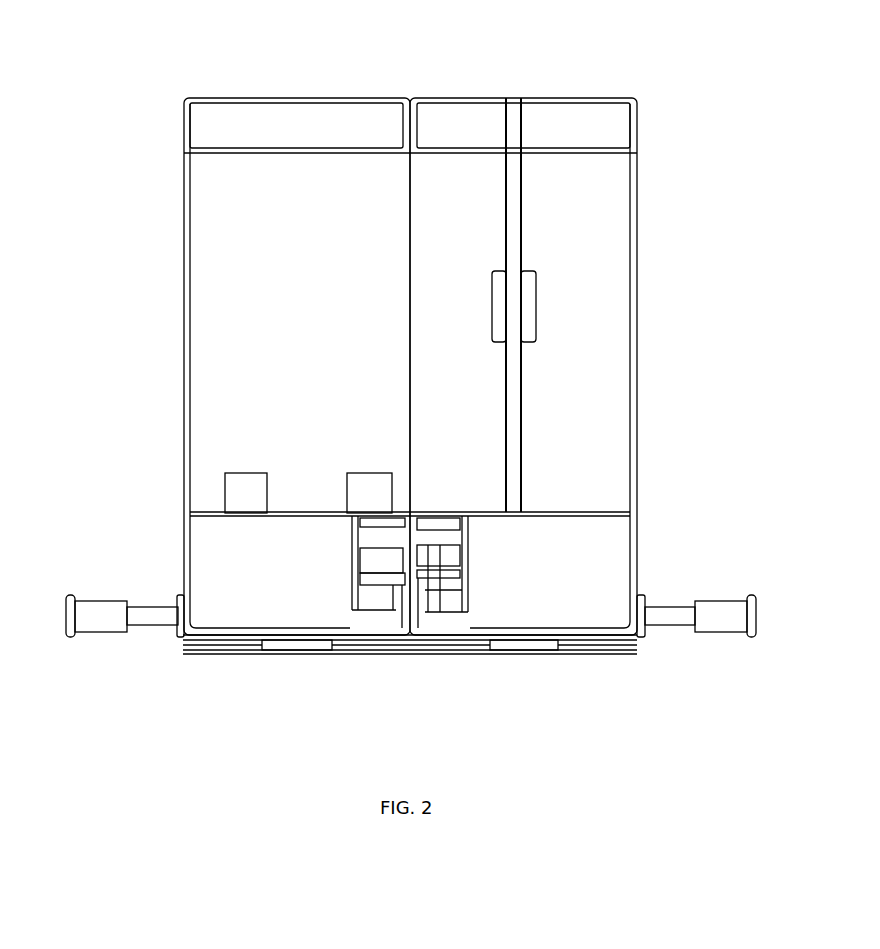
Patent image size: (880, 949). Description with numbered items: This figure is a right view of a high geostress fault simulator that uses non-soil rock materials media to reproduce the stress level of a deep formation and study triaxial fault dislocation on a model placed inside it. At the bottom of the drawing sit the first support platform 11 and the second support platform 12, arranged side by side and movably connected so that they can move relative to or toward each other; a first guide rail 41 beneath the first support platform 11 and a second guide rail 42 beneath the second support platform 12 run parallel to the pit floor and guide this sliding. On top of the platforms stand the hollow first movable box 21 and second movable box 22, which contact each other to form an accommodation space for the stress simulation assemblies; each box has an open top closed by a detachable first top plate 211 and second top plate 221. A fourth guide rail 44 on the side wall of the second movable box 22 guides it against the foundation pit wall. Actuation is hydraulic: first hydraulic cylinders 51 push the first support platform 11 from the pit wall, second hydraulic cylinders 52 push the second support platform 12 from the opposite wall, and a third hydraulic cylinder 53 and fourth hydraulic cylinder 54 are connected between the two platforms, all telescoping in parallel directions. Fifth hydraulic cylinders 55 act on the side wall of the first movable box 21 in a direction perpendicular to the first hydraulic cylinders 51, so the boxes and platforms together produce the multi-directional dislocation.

The first support platform 11 is at (197, 652).
The second support platform 12 is at (640, 655).
The first movable box 21 is at (226, 246).
The second movable box 22 is at (595, 217).
The first top plate 211 is at (297, 127).
The second top plate 221 is at (571, 127).
The first guide rail 41 is at (280, 653).
The second guide rail 42 is at (578, 653).
The fourth guide rail 44 is at (527, 300).
The first hydraulic cylinder 51 is at (148, 615).
The second hydraulic cylinder 52 is at (678, 613).
The third hydraulic cylinder 53 is at (392, 538).
The fourth hydraulic cylinder 54 is at (437, 578).
The fifth hydraulic cylinder 55 is at (252, 497).